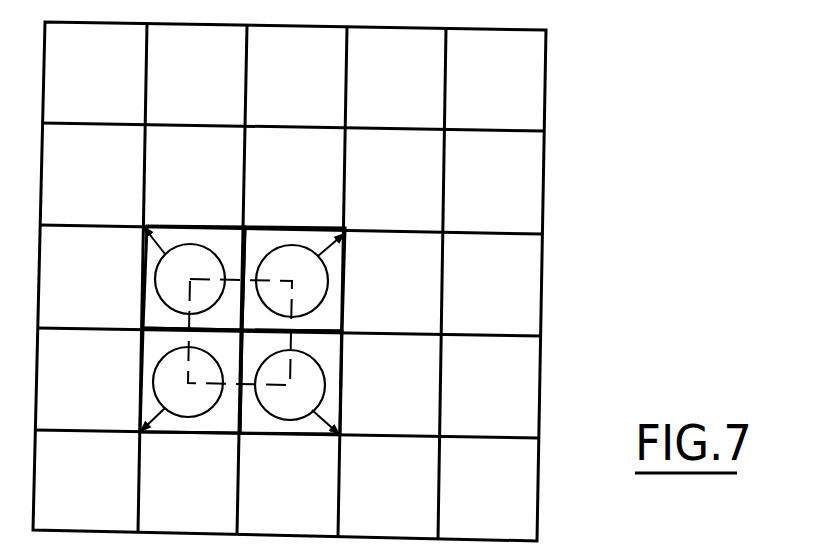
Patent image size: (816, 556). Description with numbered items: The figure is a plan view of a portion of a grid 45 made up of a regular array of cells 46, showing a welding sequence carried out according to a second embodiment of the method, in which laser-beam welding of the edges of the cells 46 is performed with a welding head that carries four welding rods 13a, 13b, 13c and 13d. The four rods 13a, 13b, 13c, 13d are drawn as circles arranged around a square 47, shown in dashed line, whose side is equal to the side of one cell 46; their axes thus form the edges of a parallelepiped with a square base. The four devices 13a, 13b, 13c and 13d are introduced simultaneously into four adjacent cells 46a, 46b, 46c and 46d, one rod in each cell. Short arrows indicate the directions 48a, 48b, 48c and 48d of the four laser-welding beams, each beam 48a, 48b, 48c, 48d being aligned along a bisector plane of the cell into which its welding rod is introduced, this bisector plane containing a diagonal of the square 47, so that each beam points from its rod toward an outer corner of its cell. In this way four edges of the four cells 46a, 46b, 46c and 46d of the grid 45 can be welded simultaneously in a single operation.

The grid 45 is at (557, 168).
The cells 46 is at (498, 202).
The adjacent cell 46a is at (147, 256).
The adjacent cell 46b is at (326, 316).
The adjacent cell 46c is at (326, 355).
The adjacent cell 46d is at (157, 348).
The square 47 is at (187, 327).
The welding rod 13a is at (195, 244).
The welding rod 13b is at (285, 245).
The welding rod 13c is at (272, 416).
The welding rod 13d is at (181, 416).
The laser-welding beam direction 48a is at (158, 228).
The laser-welding beam direction 48b is at (323, 243).
The laser-welding beam direction 48c is at (323, 418).
The laser-welding beam direction 48d is at (162, 420).